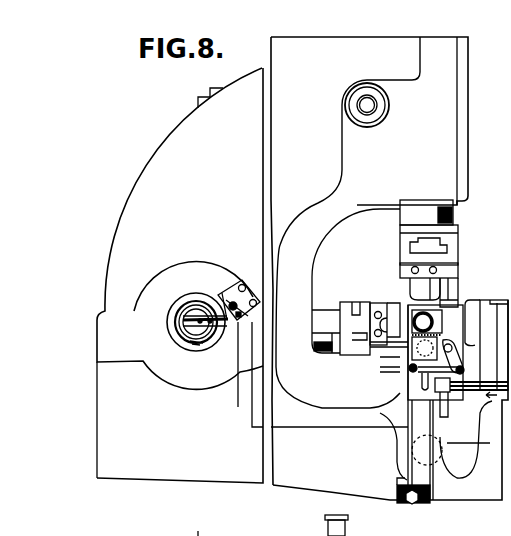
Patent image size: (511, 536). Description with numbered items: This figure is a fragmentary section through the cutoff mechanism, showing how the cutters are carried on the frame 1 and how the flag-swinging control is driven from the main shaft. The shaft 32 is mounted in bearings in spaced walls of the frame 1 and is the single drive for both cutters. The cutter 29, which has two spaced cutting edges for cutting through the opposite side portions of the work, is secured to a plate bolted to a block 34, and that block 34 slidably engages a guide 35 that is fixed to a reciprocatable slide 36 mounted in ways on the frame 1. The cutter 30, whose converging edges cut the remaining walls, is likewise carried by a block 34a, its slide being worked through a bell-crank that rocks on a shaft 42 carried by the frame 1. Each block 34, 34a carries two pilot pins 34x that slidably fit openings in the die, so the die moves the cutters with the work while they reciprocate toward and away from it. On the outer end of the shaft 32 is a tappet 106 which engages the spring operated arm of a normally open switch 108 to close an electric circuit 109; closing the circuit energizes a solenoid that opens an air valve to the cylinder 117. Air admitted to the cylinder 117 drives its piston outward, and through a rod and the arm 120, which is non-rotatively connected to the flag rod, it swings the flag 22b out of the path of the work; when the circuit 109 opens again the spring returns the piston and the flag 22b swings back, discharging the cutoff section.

The frame 1 is at (240, 473).
The flag 22b is at (199, 525).
The cutter 29 is at (393, 313).
The cutter 30 is at (430, 283).
The shaft 32 is at (190, 335).
The block 34 is at (360, 353).
The block 34a is at (455, 252).
The pilot pins 34x is at (452, 273).
The guide 35 is at (360, 314).
The slide 36 is at (410, 214).
The shaft 42 is at (500, 520).
The tappet 106 is at (222, 348).
The switch 108 is at (230, 293).
The electric circuit 109 is at (310, 425).
The cylinder 117 is at (353, 525).
The arm 120 is at (455, 353).